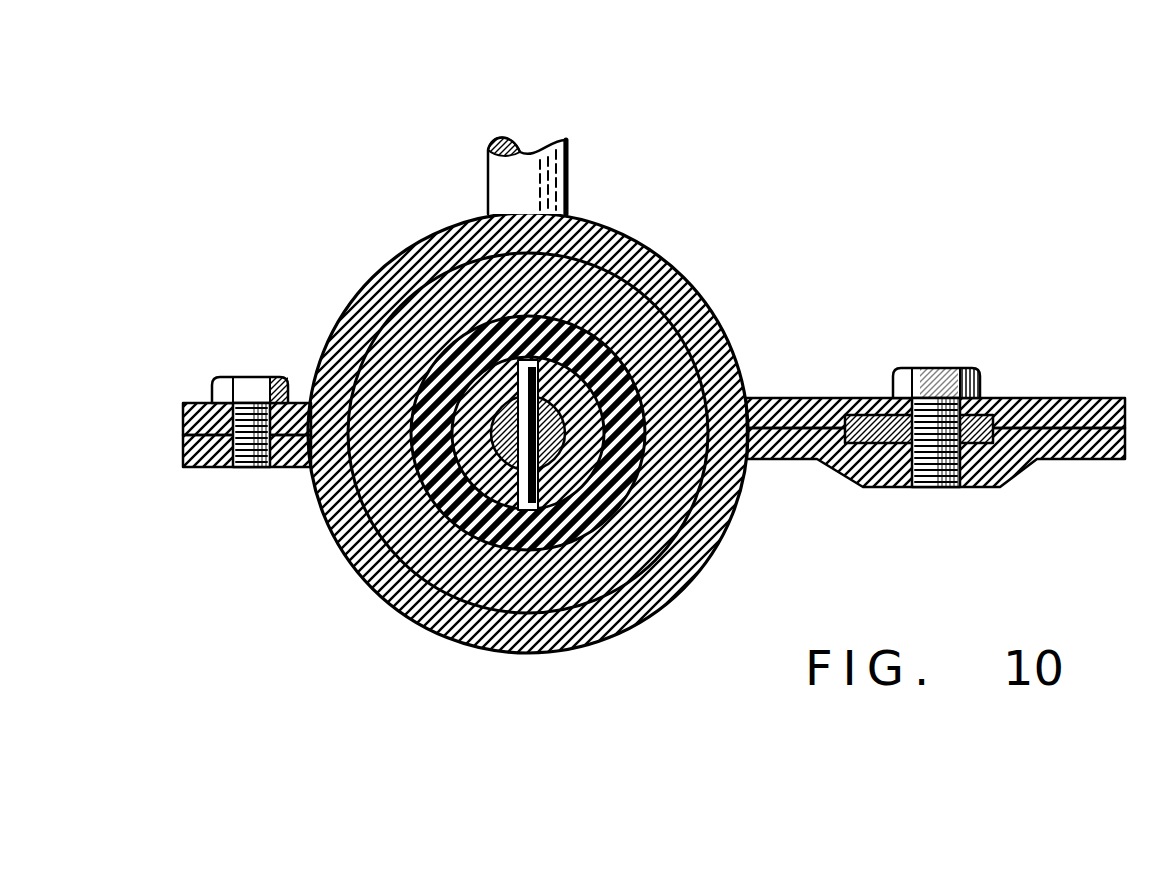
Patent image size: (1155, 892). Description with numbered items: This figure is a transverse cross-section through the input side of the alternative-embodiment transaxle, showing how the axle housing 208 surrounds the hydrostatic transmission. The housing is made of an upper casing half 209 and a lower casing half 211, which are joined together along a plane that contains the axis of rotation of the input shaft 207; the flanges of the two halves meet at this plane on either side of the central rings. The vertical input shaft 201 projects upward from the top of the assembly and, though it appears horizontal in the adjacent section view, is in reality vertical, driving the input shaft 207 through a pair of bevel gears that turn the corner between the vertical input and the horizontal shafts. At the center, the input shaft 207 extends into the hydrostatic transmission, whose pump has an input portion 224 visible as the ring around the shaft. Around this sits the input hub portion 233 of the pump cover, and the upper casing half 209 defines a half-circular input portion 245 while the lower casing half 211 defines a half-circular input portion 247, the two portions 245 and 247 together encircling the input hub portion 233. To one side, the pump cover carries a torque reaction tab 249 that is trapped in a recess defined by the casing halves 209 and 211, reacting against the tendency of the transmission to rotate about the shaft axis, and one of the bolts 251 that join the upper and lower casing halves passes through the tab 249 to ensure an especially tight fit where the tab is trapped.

The vertical input shaft 201 is at (568, 182).
The input shaft 207 is at (553, 446).
The axle housing 208 is at (176, 419).
The upper casing half 209 is at (801, 418).
The lower casing half 211 is at (782, 450).
The input portion 224 is at (481, 362).
The input hub portion 233 is at (634, 324).
The half-circular input portion 245 is at (400, 253).
The half-circular input portion 247 is at (430, 605).
The torque reaction tab 249 is at (1015, 418).
The bolt 251 is at (932, 388).